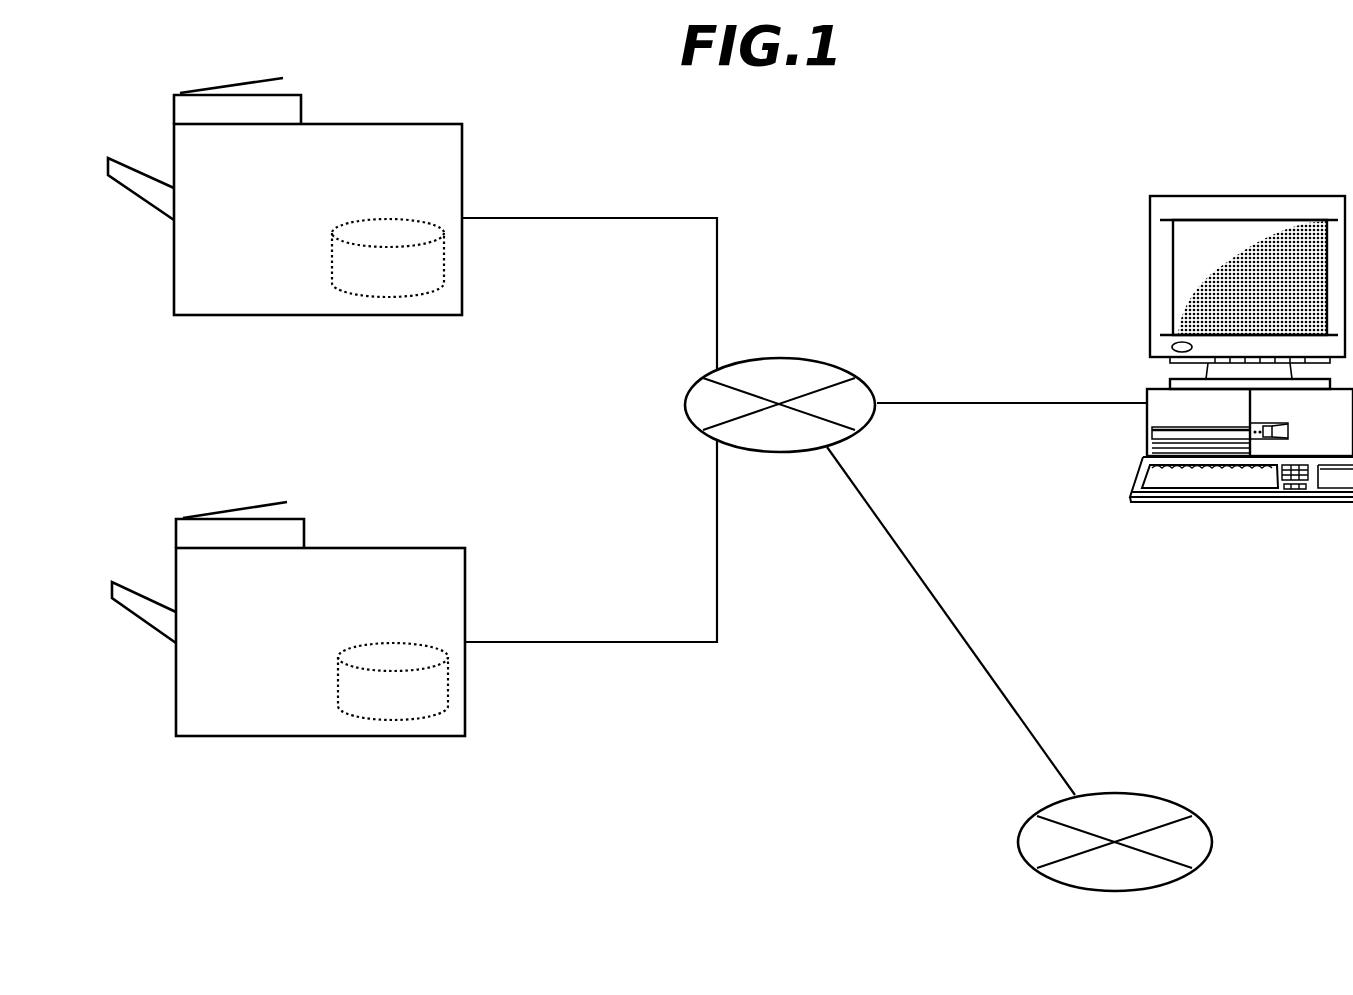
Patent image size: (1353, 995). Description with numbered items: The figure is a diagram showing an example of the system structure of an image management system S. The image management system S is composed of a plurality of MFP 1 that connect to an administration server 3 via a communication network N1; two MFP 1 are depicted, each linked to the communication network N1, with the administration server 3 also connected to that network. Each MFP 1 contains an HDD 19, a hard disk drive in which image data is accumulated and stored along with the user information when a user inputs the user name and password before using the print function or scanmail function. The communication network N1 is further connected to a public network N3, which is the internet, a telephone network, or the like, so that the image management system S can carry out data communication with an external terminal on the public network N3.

The image management system S is at (967, 135).
The MFP 1 is at (433, 123).
The HDD (Hard Disk Drive) 19 is at (390, 298).
The administration server 3 is at (1290, 195).
The communication network N1 is at (838, 363).
The public network N3 is at (1173, 802).